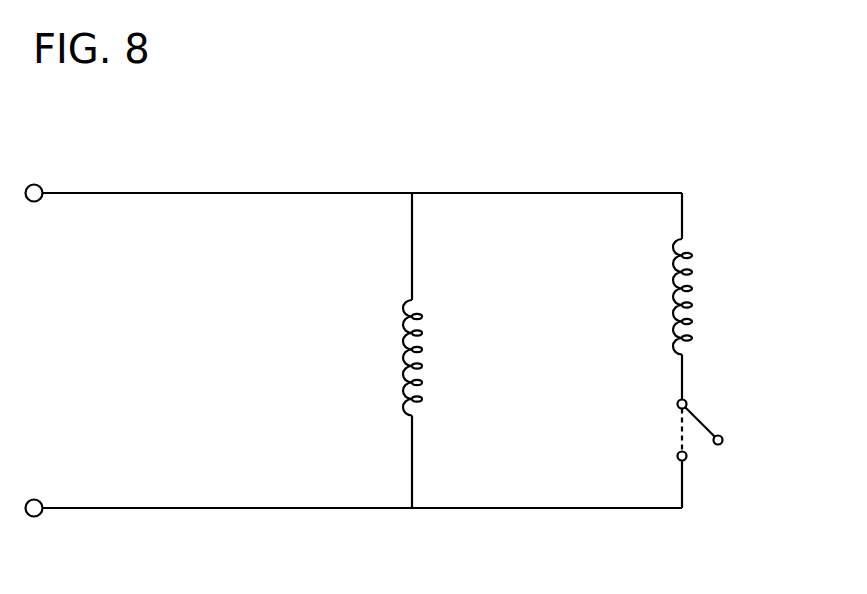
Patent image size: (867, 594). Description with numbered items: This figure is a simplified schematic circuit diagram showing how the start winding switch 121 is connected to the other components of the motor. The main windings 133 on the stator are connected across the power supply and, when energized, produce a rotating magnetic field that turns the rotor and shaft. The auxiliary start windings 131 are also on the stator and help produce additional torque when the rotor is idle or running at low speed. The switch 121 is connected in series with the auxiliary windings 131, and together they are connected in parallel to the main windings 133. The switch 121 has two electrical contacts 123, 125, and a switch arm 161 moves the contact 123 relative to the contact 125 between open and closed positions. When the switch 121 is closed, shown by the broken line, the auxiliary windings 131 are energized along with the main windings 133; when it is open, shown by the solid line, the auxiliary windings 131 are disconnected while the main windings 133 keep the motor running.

The start winding switch 121 is at (610, 418).
The electrical contact 123 is at (721, 444).
The electrical contact 125 is at (686, 457).
The auxiliary start windings 131 is at (676, 286).
The main windings 133 is at (402, 357).
The switch arm 161 is at (716, 403).